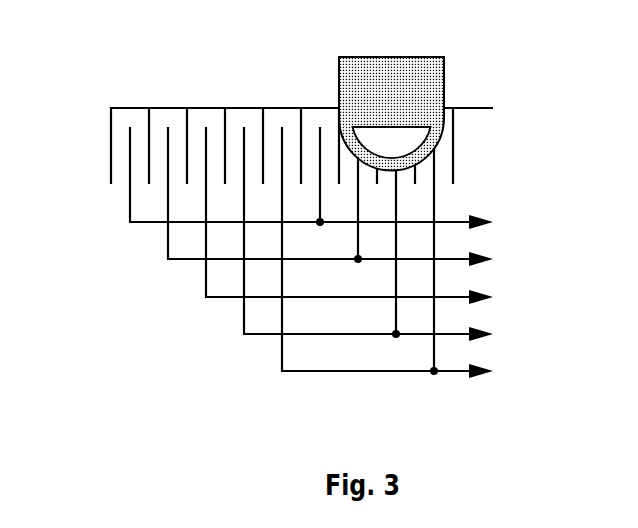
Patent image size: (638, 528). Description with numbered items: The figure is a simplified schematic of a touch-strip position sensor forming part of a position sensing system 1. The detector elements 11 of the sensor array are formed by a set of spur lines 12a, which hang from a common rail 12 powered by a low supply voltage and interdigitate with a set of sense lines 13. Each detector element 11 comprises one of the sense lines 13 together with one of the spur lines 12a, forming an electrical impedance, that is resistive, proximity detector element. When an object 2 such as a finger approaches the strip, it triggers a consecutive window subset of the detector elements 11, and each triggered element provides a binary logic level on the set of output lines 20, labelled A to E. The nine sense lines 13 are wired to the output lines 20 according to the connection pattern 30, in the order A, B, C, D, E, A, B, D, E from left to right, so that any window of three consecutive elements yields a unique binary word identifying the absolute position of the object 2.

The system 1 is at (112, 318).
The object 2 is at (425, 60).
The detector elements 11 is at (123, 106).
The common rail 12 is at (470, 108).
The spur lines 12a is at (110, 132).
The sense lines 13 is at (130, 192).
The output lines 20 is at (478, 375).
The connection pattern 30 is at (243, 334).